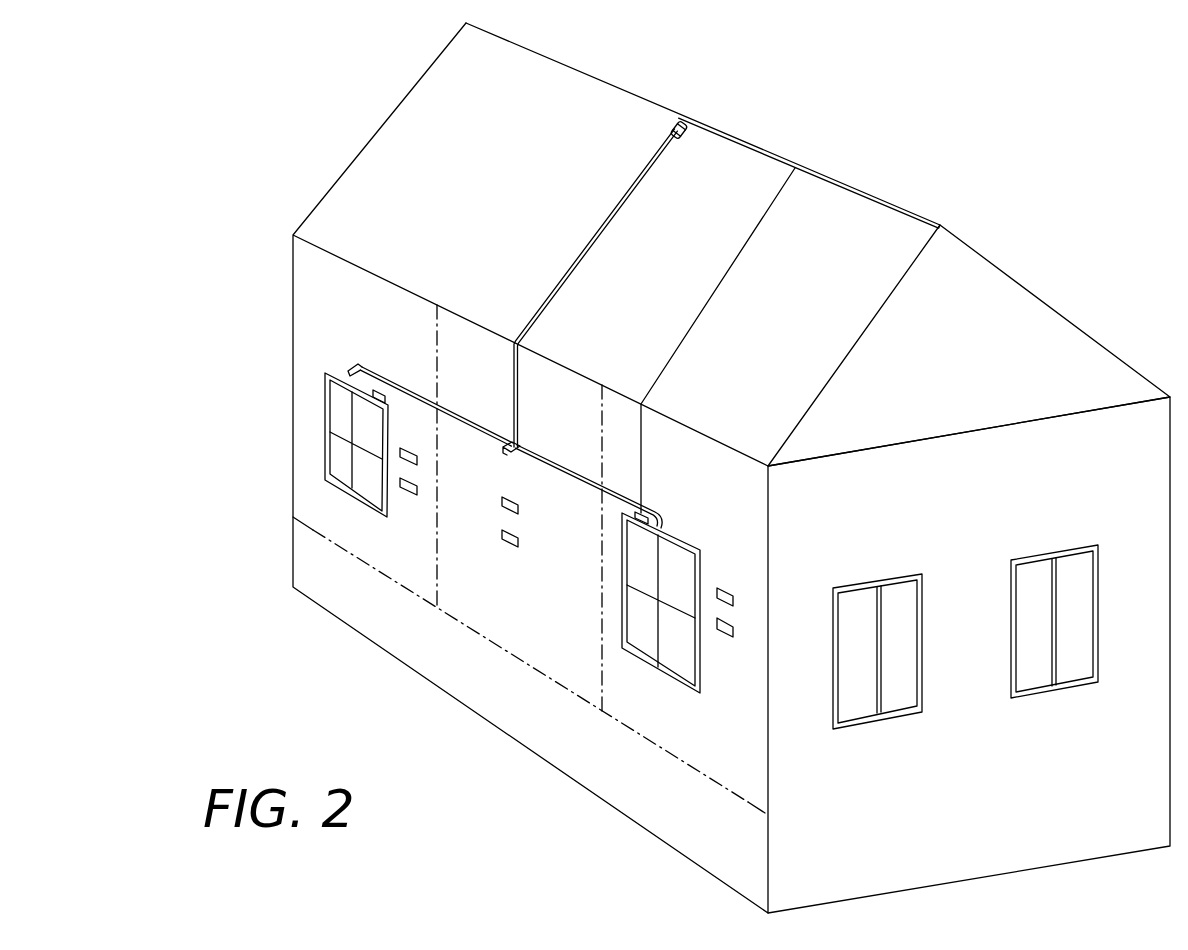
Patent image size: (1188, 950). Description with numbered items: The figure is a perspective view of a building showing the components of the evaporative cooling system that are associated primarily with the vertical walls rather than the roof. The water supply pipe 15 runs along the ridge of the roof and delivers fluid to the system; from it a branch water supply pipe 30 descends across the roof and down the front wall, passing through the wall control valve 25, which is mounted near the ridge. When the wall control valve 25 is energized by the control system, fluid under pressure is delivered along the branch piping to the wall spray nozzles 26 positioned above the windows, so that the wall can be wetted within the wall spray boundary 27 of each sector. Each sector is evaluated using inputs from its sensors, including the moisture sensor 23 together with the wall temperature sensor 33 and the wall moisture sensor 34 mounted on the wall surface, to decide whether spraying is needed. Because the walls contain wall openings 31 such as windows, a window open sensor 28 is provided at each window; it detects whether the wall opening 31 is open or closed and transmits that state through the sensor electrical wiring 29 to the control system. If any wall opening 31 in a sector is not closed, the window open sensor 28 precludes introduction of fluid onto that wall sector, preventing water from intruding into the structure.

The water supply pipe 15 is at (820, 170).
The moisture sensor 23 is at (318, 342).
The wall control valve 25 is at (690, 128).
The wall spray nozzle 26 is at (668, 527).
The wall spray boundary 27 is at (600, 457).
The window open sensor 28 is at (368, 380).
The sensor electrical wiring 29 is at (683, 343).
The branch water supply pipe 30 is at (590, 247).
The wall opening 31 is at (615, 608).
The wall temperature sensor 33 is at (418, 462).
The wall moisture sensor 34 is at (418, 493).